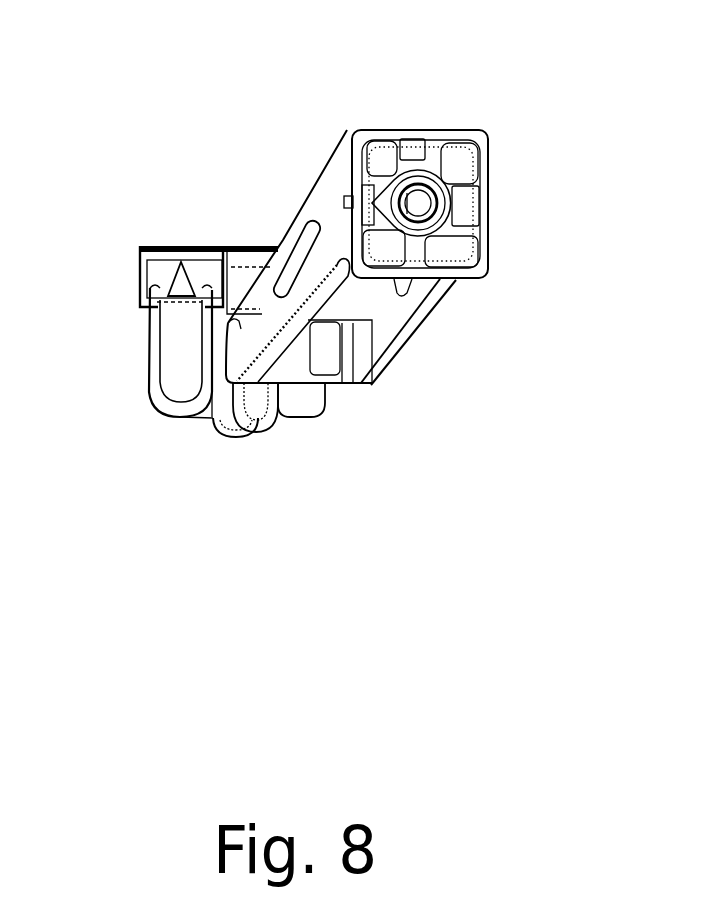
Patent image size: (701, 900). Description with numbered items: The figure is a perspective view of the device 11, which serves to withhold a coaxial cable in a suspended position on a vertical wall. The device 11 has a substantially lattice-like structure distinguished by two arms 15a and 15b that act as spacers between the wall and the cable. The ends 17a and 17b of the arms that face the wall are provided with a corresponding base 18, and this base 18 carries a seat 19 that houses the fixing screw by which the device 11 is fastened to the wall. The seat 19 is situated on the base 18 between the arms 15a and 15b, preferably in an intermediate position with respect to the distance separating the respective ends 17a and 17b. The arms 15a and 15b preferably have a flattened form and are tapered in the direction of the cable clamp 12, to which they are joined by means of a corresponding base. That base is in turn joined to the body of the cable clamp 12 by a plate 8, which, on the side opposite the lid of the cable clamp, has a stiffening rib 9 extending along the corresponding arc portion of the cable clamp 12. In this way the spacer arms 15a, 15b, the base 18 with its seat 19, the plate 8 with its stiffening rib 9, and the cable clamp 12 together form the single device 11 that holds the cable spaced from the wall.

The plate 8 is at (195, 339).
The stiffening rib 9 is at (242, 502).
The device 11 is at (328, 339).
The cable clamp 12 is at (122, 400).
The arm 15a is at (456, 367).
The arm 15b is at (242, 192).
The end of arm 17a is at (507, 332).
The end of arm 17b is at (288, 191).
The base 18 is at (470, 169).
The seat 19 is at (499, 213).